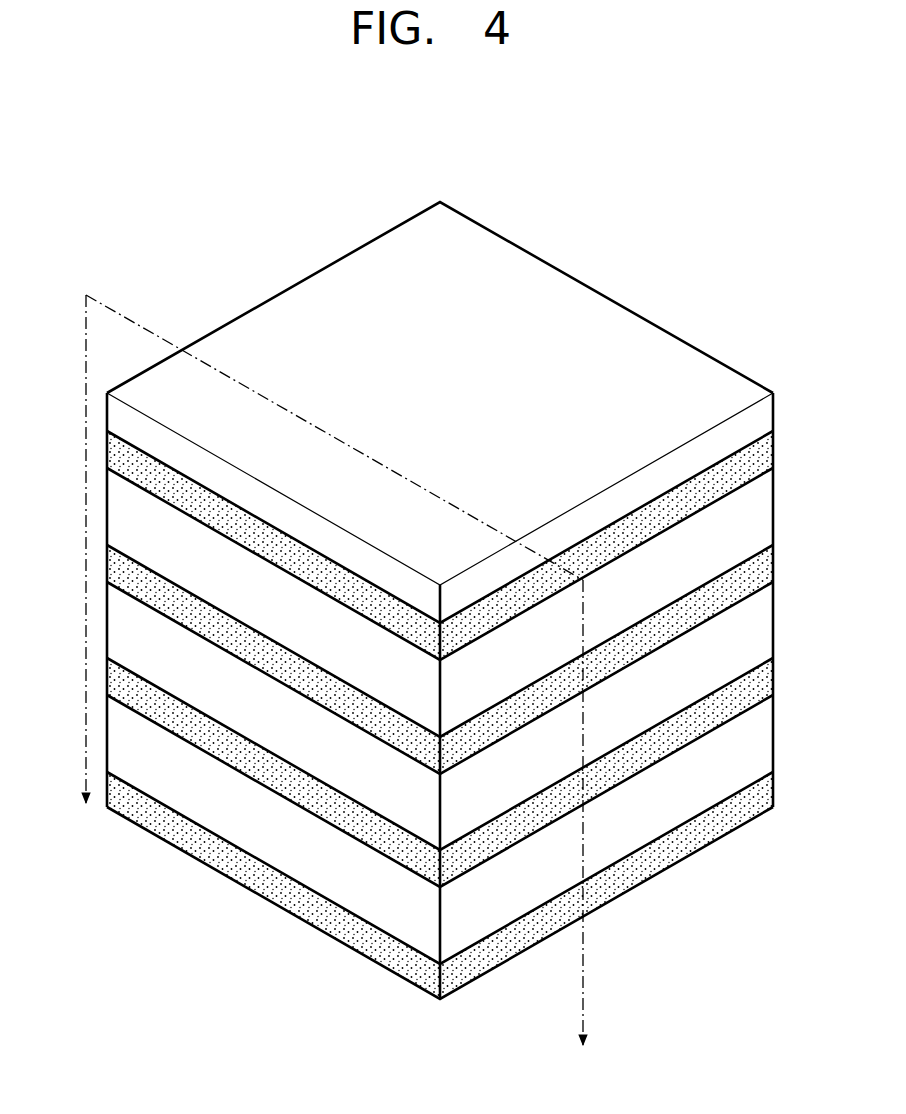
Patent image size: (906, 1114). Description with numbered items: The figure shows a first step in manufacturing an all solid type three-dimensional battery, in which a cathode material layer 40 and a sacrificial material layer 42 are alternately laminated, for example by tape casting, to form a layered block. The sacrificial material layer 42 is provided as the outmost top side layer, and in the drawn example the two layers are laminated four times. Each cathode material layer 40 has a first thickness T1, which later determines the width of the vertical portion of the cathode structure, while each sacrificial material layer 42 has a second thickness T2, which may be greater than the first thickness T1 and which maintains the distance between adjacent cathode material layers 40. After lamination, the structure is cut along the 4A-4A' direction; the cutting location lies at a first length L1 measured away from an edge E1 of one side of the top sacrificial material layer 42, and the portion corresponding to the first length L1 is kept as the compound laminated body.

The cathode material layer 40 is at (293, 903).
The sacrificial material layer 42 is at (368, 888).
The edge E1 is at (268, 483).
The first length L1 is at (413, 485).
The first thickness T1 is at (170, 780).
The second thickness T2 is at (266, 788).
The cutting direction line 4A is at (315, 549).
The cutting direction line 4A' is at (560, 815).